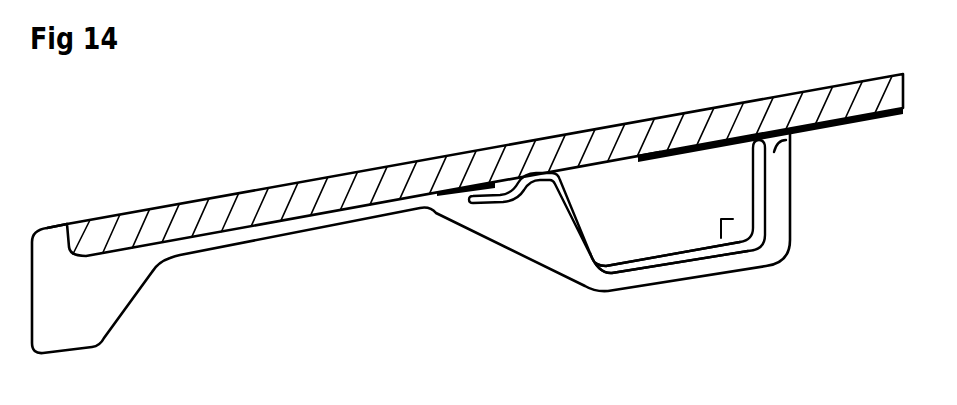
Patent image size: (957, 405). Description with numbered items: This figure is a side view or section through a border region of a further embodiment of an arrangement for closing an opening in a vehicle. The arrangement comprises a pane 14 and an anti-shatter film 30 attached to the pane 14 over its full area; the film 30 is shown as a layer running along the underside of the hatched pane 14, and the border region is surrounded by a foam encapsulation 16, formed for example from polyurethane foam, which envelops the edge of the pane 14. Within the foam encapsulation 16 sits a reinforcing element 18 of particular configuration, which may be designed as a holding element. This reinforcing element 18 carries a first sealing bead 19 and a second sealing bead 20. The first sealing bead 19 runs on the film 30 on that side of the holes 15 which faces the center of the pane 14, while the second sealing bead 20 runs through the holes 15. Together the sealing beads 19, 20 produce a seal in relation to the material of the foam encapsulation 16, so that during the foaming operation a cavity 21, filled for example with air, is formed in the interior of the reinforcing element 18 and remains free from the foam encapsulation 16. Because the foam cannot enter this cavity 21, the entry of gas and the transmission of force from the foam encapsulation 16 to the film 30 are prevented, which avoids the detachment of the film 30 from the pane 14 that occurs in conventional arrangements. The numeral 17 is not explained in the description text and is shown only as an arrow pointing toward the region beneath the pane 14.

The pane 14 is at (194, 218).
The holes 15 is at (602, 110).
The foam encapsulation 16 is at (512, 227).
The recess 17 is at (646, 172).
The reinforcing element 18 is at (624, 267).
The first sealing bead 19 is at (784, 150).
The second sealing bead 20 is at (542, 170).
The cavity 21 is at (722, 226).
The anti-shatter film 30 is at (465, 188).